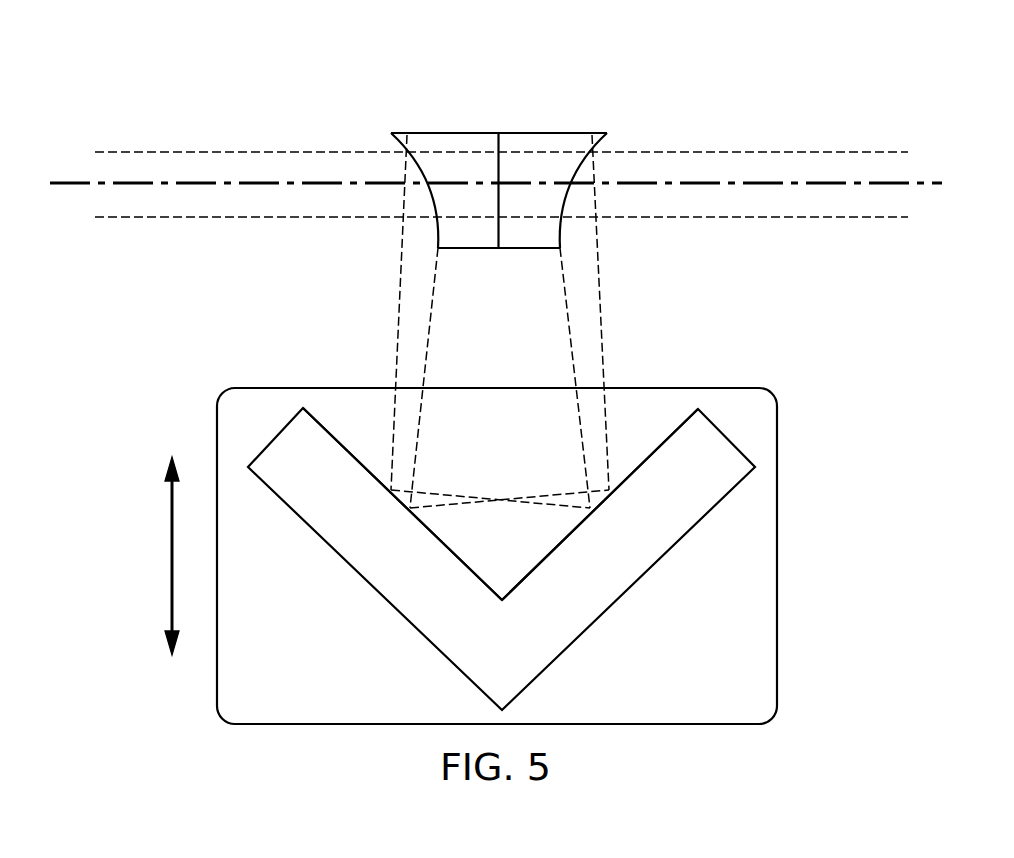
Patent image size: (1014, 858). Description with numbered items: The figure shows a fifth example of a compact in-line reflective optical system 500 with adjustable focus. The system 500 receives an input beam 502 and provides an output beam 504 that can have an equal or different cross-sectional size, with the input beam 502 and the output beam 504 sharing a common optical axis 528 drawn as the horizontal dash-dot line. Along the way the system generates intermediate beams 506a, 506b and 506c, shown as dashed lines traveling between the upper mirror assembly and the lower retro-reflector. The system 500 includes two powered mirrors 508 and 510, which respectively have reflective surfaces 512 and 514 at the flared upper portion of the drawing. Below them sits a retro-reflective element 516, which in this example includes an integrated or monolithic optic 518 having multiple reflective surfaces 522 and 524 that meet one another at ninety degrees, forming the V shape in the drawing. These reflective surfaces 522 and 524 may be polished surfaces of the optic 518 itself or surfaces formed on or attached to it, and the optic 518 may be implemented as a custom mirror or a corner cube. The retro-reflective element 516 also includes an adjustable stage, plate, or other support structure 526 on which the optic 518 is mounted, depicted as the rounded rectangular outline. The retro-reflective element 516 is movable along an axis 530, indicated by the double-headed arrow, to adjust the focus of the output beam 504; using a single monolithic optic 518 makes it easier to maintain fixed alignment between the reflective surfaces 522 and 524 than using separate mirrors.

The compact in-line reflective optical system 500 is at (246, 60).
The input beam 502 is at (232, 150).
The output beam 504 is at (755, 151).
The common optical axis 528 is at (70, 183).
The powered mirror 508 is at (445, 140).
The powered mirror 510 is at (555, 140).
The reflective surface 512 is at (390, 134).
The reflective surface 514 is at (607, 140).
The intermediate beam 506a is at (432, 288).
The intermediate beam 506b is at (500, 497).
The intermediate beam 506c is at (572, 340).
The retro-reflective element 516 is at (637, 752).
The support structure 526 is at (731, 725).
The integrated or monolithic optic 518 is at (373, 592).
The reflective surface 522 is at (358, 450).
The reflective surface 524 is at (542, 562).
The axis 530 is at (170, 558).